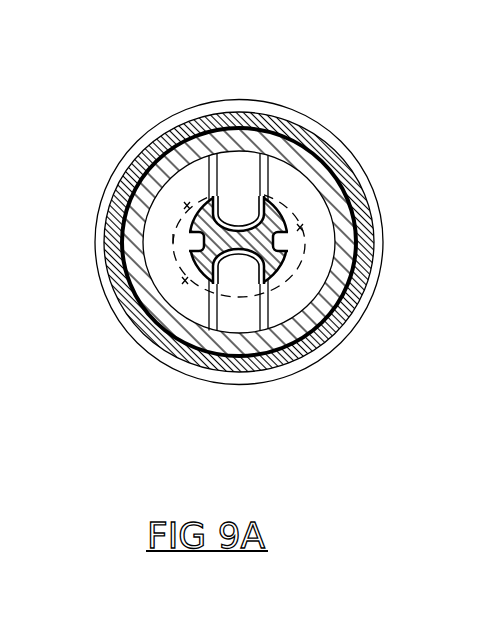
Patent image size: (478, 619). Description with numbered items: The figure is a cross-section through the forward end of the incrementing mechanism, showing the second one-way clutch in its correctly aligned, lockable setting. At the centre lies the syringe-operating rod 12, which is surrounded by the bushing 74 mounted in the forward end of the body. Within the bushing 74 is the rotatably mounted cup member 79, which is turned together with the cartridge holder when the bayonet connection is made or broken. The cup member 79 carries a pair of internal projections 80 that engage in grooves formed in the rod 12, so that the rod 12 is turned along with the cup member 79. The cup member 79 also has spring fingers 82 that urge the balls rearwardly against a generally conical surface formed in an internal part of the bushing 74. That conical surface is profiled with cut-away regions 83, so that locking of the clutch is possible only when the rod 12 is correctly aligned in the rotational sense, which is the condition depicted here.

The syringe-operating rod 12 is at (197, 263).
The bushing 74 is at (265, 355).
The cup member 79 is at (328, 338).
The internal projections 80 is at (197, 240).
The spring fingers 82 is at (238, 172).
The cut-away regions 83 is at (186, 206).